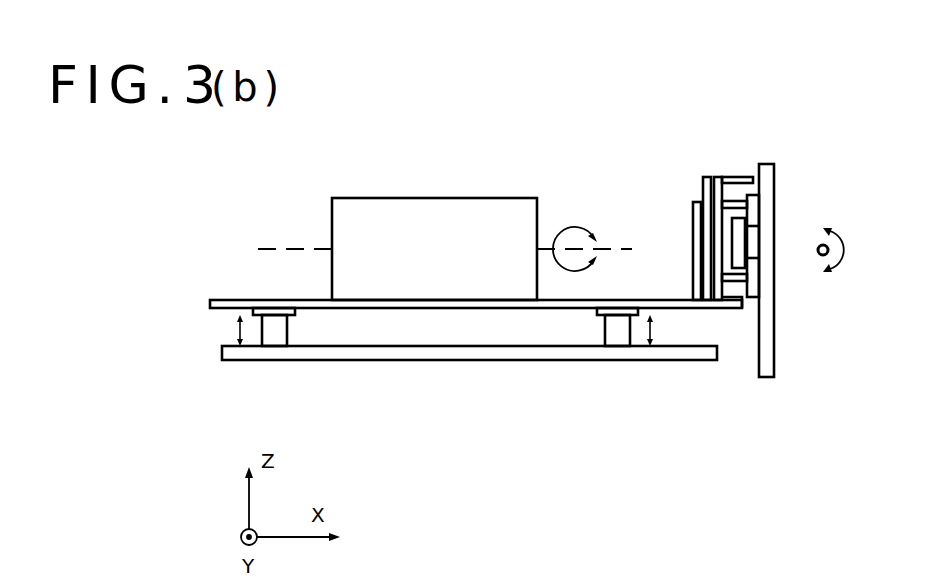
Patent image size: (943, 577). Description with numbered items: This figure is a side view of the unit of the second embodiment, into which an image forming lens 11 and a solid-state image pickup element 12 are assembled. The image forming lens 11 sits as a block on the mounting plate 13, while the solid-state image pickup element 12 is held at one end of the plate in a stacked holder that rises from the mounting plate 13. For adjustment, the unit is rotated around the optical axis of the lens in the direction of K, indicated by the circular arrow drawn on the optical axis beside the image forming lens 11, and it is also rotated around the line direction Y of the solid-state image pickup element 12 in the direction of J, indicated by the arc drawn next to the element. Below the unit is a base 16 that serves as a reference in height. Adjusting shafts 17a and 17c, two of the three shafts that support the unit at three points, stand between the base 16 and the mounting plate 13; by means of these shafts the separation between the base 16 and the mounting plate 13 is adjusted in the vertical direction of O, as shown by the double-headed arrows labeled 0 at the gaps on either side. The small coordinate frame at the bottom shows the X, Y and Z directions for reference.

The image forming lens 11 is at (449, 198).
The solid-state image pickup element 12 is at (738, 246).
The mounting plate 13 is at (238, 301).
The base 16 is at (235, 360).
The adjusting shaft 17a is at (278, 338).
The adjusting shaft 17c is at (610, 333).
The vertical adjustment direction 0 is at (238, 328).
The rotation direction around optical axis K is at (573, 227).
The rotation direction around line direction J is at (841, 263).